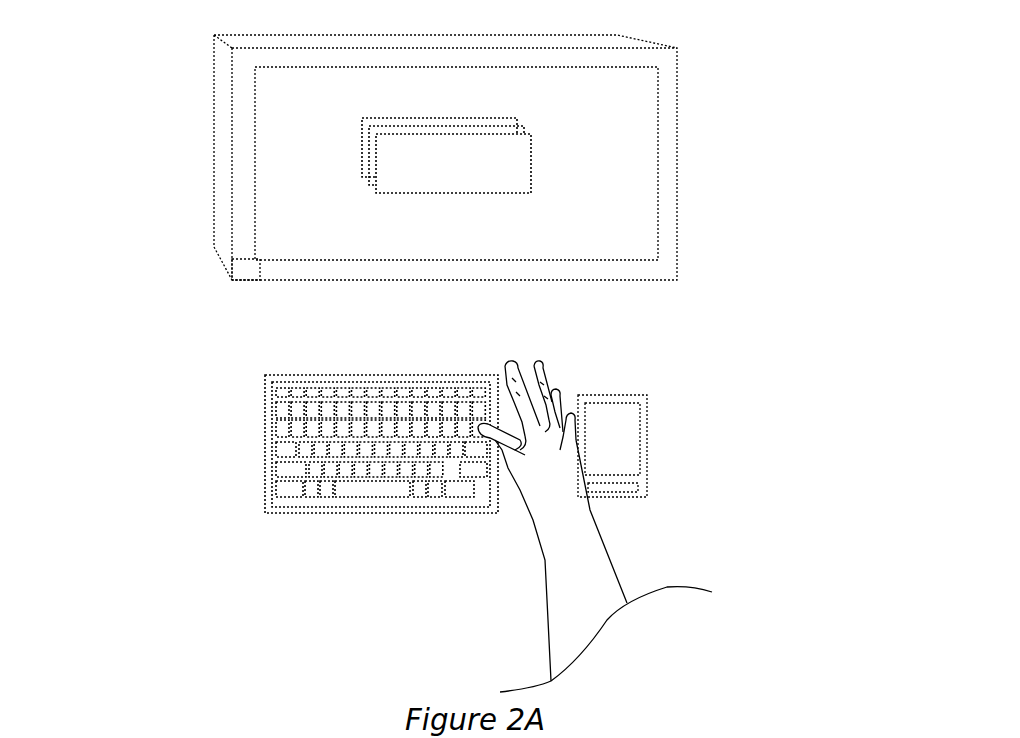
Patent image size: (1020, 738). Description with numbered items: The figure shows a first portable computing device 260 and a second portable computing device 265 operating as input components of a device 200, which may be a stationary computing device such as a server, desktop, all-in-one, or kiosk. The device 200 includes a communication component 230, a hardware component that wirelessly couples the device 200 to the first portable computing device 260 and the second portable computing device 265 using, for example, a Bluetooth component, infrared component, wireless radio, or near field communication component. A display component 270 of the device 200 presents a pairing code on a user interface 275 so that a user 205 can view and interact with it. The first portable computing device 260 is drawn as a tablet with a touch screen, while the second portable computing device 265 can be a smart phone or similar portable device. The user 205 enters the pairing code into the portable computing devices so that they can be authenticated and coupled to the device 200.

The device 200 is at (200, 60).
The communication component 230 is at (243, 258).
The display component 270 is at (658, 60).
The user interface 275 is at (643, 200).
The first portable computing device 260 is at (255, 452).
The second portable computing device 265 is at (815, 398).
The user 205 is at (598, 628).